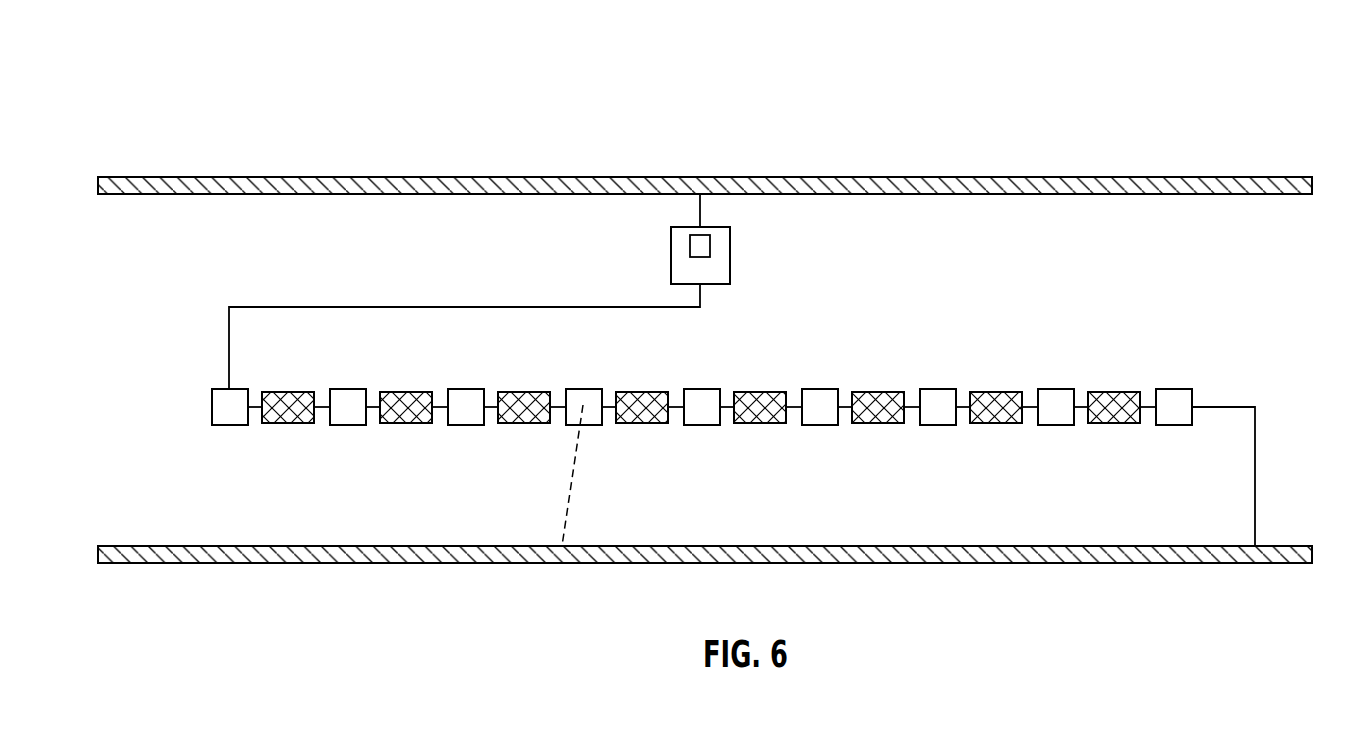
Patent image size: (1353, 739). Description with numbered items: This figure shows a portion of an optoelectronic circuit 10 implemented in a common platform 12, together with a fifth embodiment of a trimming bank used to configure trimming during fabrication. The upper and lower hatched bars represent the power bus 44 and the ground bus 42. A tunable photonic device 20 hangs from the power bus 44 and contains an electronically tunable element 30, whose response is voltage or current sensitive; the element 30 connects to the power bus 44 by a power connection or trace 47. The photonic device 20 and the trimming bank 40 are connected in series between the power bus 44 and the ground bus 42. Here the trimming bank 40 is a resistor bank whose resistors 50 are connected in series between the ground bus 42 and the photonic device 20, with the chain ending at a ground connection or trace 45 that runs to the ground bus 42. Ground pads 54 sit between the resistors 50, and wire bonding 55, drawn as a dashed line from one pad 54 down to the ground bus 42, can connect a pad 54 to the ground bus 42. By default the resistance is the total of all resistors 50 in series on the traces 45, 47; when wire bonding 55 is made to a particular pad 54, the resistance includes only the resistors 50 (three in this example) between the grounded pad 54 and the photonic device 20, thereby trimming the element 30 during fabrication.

The optoelectronic circuit 10 is at (140, 100).
The common platform 12 is at (718, 153).
The tunable photonic device 20 is at (654, 253).
The electronically tunable element 30 is at (710, 250).
The trimming bank 40 is at (724, 425).
The ground bus 42 is at (1163, 563).
The power bus 44 is at (1073, 177).
The ground connection or trace 45 is at (1255, 472).
The power connection or trace 47 is at (664, 308).
The resistors 50 is at (283, 423).
The ground pads 54 is at (473, 425).
The wire bonding 55 is at (580, 460).